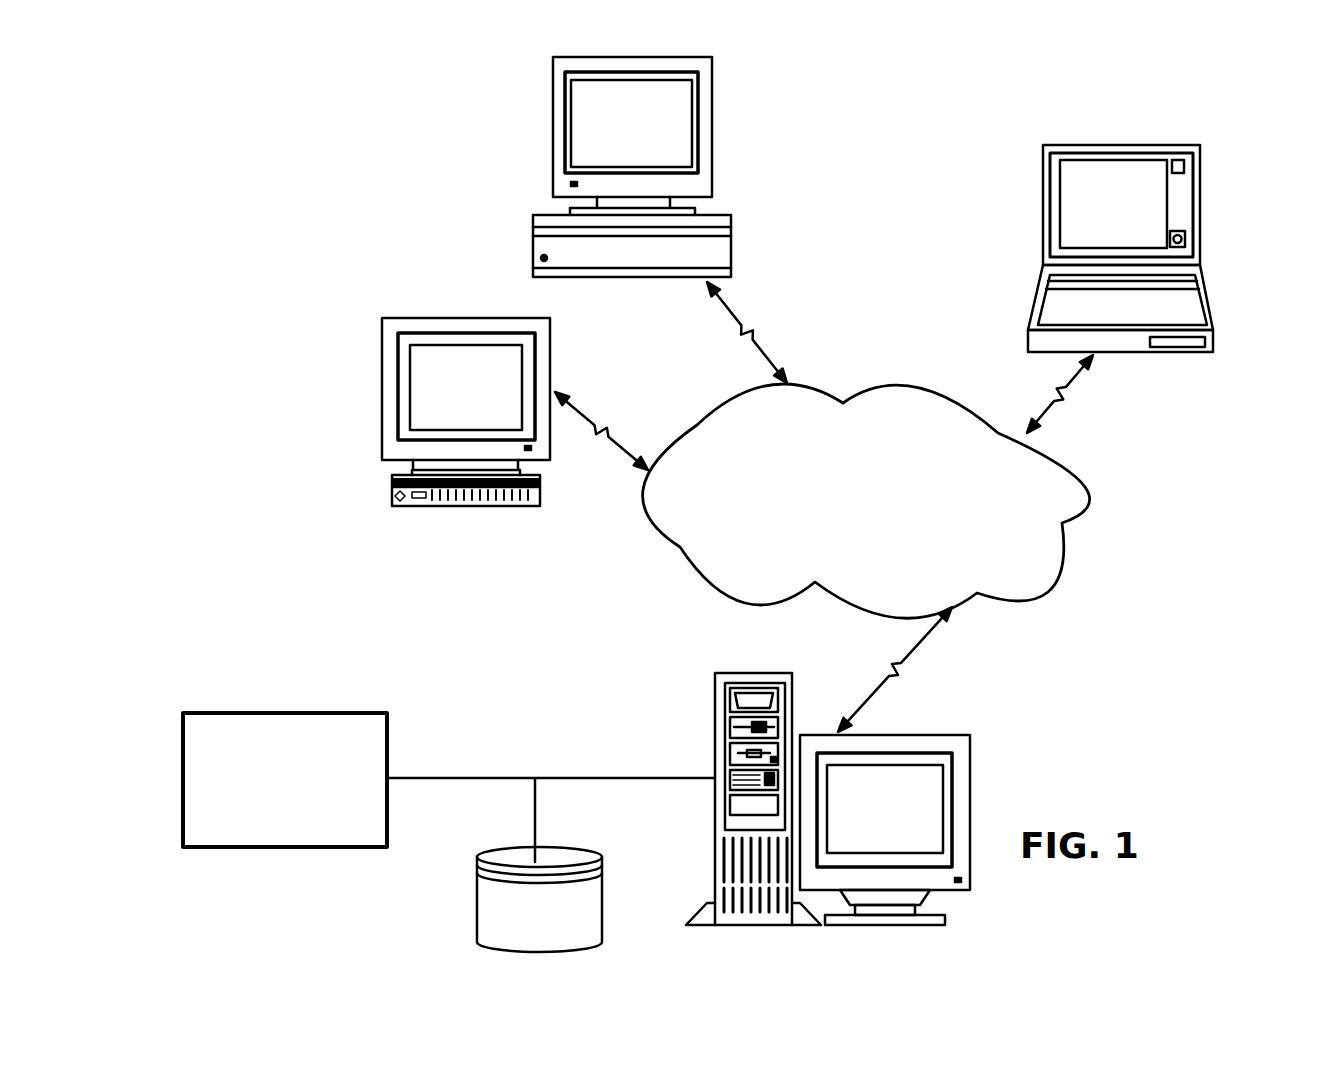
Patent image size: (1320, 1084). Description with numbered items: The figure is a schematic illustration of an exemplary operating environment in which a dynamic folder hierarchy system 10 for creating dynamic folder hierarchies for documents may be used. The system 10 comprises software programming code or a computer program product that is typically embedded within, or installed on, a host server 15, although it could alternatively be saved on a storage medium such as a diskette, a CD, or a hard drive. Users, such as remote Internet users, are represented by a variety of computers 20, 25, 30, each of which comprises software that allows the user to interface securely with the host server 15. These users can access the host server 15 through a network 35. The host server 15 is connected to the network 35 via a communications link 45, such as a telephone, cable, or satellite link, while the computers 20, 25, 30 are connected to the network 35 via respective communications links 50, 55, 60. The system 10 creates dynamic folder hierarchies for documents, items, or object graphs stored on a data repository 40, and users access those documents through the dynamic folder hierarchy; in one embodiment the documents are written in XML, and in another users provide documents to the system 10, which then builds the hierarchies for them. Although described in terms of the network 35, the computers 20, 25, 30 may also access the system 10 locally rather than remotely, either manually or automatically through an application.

The system 10 is at (182, 755).
The host server 15 is at (713, 718).
The computer 20 is at (552, 373).
The computer 25 is at (713, 112).
The computer 30 is at (1205, 300).
The network 35 is at (1058, 578).
The data repository 40 is at (477, 880).
The communications link 45 is at (880, 673).
The communications link 50 is at (603, 432).
The communications link 55 is at (752, 342).
The communications link 60 is at (1053, 408).